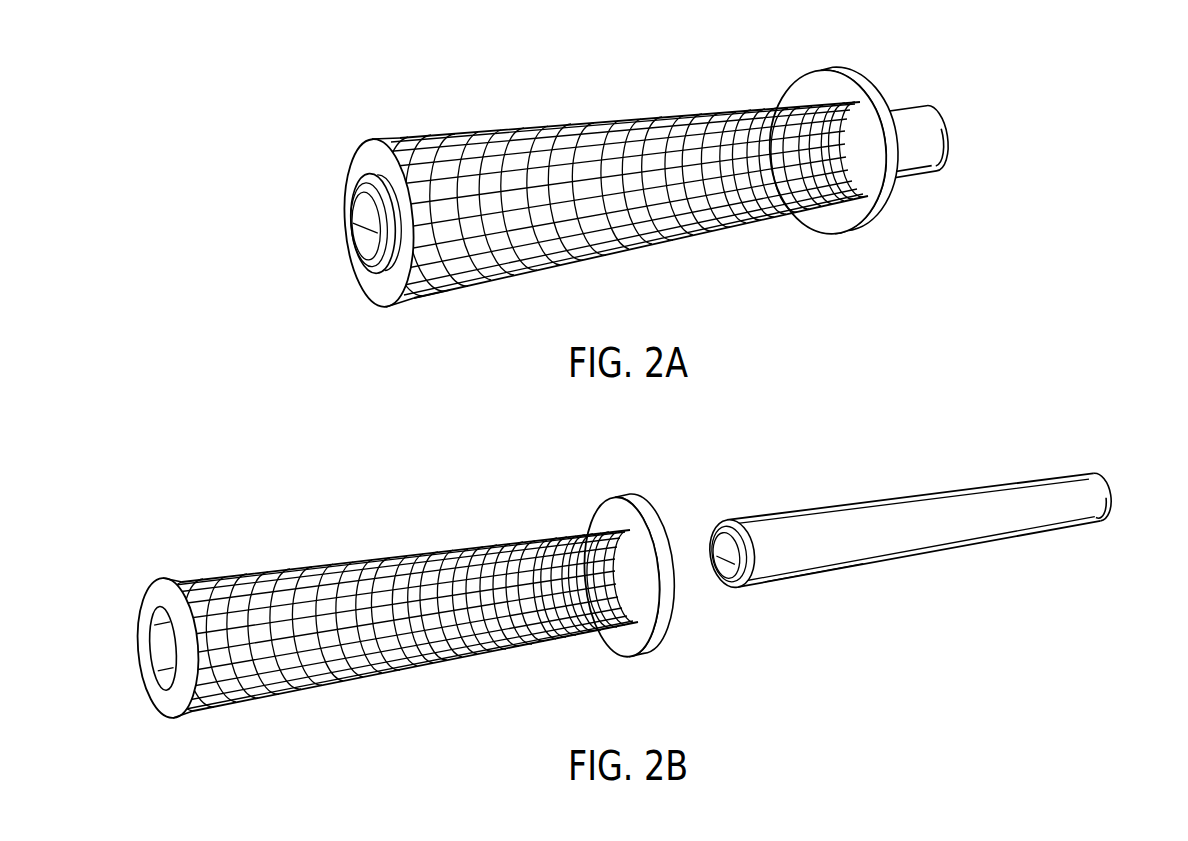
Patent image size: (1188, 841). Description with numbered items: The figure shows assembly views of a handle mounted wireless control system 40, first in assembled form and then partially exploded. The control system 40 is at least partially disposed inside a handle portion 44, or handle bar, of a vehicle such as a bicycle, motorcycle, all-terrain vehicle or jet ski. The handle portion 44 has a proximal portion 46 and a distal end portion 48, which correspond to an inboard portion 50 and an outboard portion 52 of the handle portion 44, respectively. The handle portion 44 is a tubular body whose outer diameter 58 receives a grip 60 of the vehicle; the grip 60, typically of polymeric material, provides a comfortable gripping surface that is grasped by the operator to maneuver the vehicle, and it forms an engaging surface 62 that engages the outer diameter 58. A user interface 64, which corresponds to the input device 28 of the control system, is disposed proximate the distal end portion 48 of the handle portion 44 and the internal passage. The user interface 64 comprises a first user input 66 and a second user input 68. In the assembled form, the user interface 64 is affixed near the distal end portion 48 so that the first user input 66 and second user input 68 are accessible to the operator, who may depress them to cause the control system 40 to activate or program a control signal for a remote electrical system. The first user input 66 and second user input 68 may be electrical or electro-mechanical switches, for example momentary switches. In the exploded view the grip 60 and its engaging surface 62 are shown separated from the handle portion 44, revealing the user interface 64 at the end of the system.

In FIG. 2A, the wireless control system 40 is at (606, 197).
In FIG. 2A, the handle portion 44 is at (879, 165).
In FIG. 2B, the handle portion 44 is at (907, 543).
In FIG. 2A, the proximal portion 46 is at (913, 170).
In FIG. 2B, the proximal portion 46 is at (931, 522).
In FIG. 2A, the distal end portion 48 is at (542, 208).
In FIG. 2B, the distal end portion 48 is at (787, 610).
In FIG. 2A, the inboard portion 50 is at (815, 250).
In FIG. 2A, the outboard portion 52 is at (467, 312).
In FIG. 2A, the outer diameter 58 is at (923, 120).
In FIG. 2B, the outer diameter 58 is at (1090, 480).
In FIG. 2A, the grip 60 is at (571, 127).
In FIG. 2B, the grip 60 is at (372, 557).
In FIG. 2A, the engaging surface 62 is at (375, 273).
In FIG. 2B, the engaging surface 62 is at (165, 663).
In FIG. 2A, the input device 28 is at (303, 205).
In FIG. 2B, the input device 28 is at (703, 575).
In FIG. 2A, the user interface 64 is at (303, 205).
In FIG. 2B, the user interface 64 is at (703, 575).
In FIG. 2A, the first user input 66 is at (357, 213).
In FIG. 2B, the first user input 66 is at (720, 537).
In FIG. 2A, the second user input 68 is at (352, 242).
In FIG. 2B, the second user input 68 is at (712, 553).